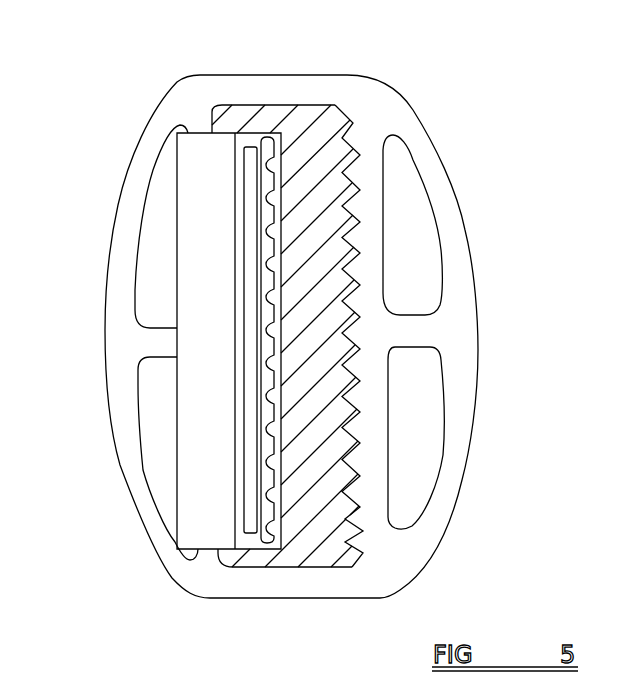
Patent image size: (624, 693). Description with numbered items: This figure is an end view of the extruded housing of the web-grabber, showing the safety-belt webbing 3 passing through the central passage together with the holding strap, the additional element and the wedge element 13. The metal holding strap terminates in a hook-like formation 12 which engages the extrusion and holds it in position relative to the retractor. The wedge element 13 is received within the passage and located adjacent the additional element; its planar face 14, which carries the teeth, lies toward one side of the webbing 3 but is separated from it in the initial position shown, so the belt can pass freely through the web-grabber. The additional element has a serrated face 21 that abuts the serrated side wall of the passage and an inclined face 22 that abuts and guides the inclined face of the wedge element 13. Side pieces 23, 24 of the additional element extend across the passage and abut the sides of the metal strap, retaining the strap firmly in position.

The safety-belt 3 is at (246, 402).
The hook-like formation 12 is at (186, 503).
The wedge element 13 is at (275, 187).
The planar face 14 is at (268, 224).
The serrated face 21 is at (363, 446).
The inclined face 22 is at (283, 263).
The side piece 23 is at (254, 123).
The side piece 24 is at (253, 567).